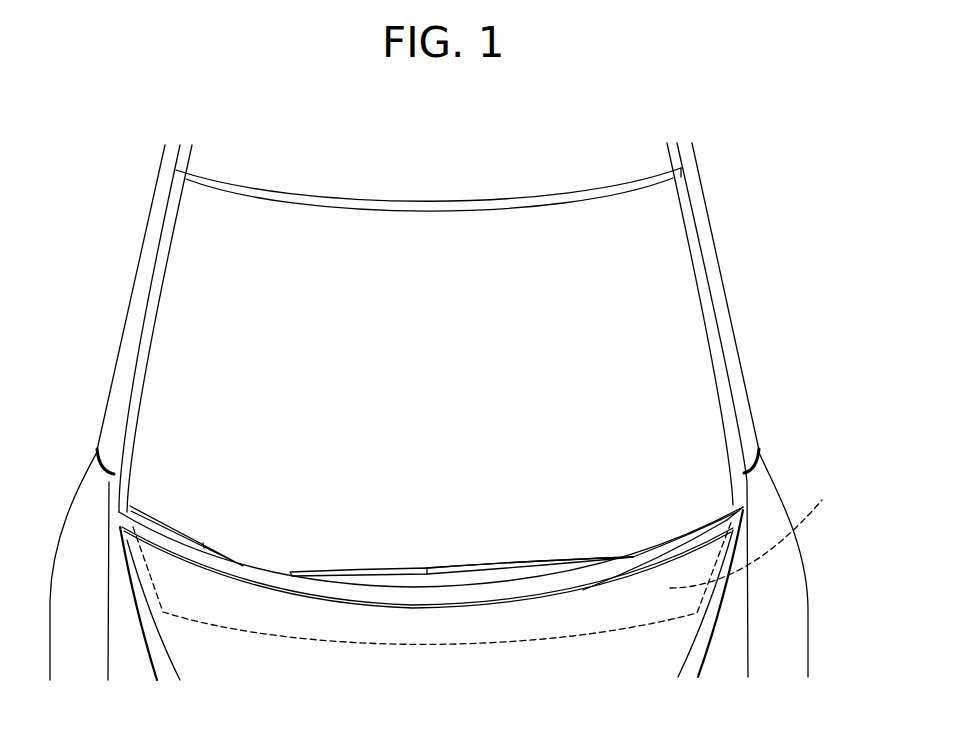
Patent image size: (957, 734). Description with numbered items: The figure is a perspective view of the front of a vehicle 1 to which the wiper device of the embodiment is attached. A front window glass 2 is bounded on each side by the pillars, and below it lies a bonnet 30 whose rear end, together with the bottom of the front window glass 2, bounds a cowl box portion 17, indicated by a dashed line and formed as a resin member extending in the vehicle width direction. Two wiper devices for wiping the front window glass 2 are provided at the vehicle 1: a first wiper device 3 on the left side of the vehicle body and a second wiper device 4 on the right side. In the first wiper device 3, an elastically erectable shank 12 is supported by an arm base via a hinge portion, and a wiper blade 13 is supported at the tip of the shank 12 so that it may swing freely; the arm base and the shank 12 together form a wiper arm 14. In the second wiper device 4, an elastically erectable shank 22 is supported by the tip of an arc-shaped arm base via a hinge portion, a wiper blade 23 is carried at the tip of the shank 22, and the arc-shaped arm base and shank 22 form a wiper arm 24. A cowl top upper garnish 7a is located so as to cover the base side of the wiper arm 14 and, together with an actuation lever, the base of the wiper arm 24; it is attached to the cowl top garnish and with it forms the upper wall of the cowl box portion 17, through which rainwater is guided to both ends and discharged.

The vehicle 1 is at (95, 206).
The front window glass 2 is at (420, 430).
The first wiper device 3 is at (512, 548).
The second wiper device 4 is at (188, 522).
The cowl top upper garnish 7a is at (483, 593).
The shank 12 is at (556, 568).
The wiper blade 13 is at (370, 568).
The wiper arm 14 is at (531, 530).
The cowl box portion 17 is at (764, 538).
The shank 22 is at (221, 557).
The wiper blade 23 is at (148, 510).
The wiper arm 24 is at (504, 540).
The bonnet 30 is at (412, 678).